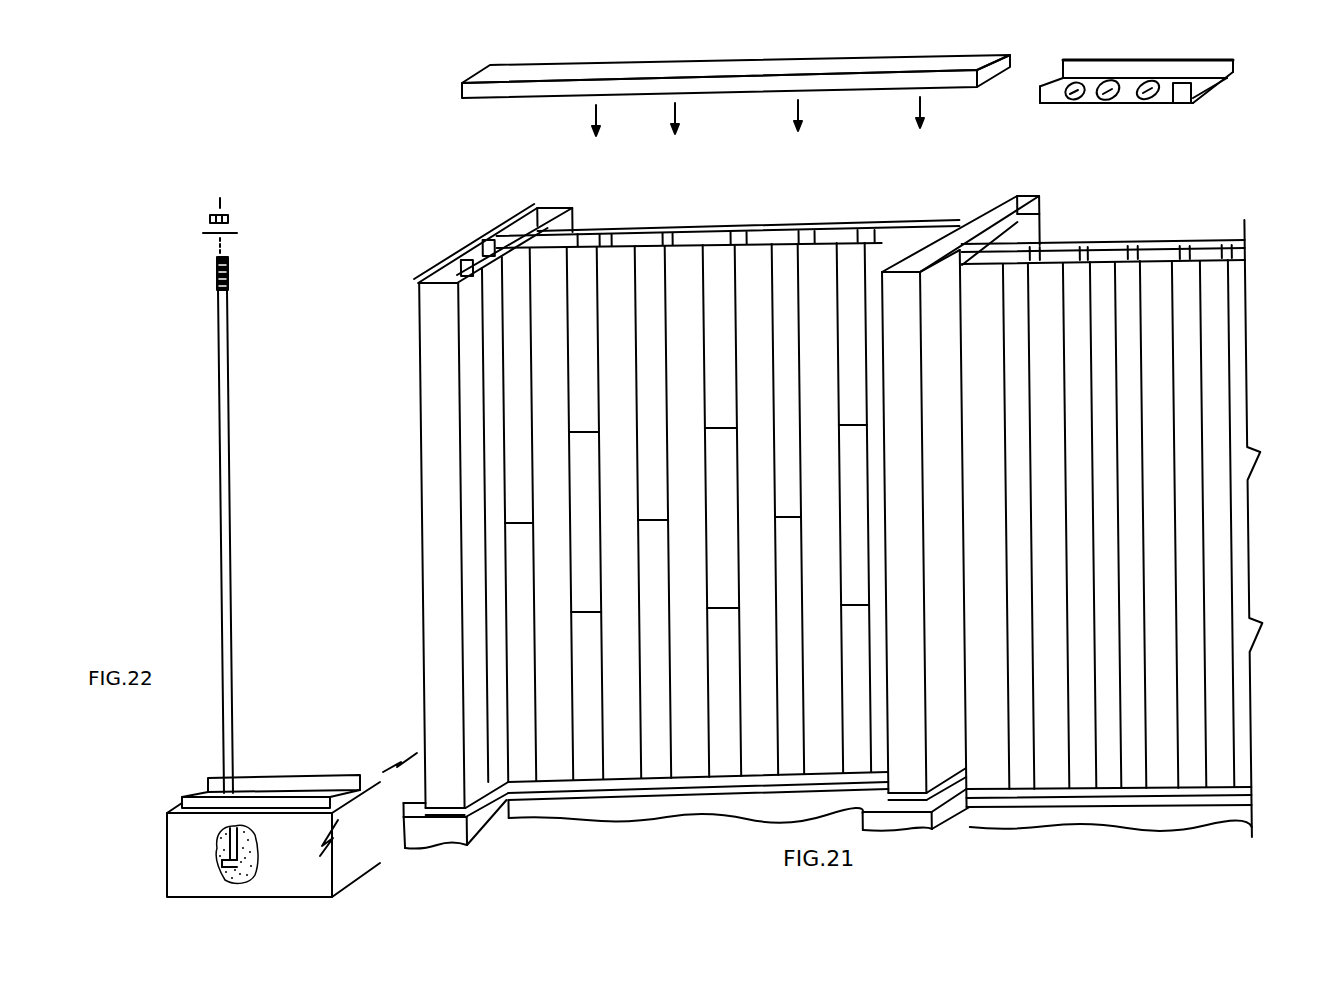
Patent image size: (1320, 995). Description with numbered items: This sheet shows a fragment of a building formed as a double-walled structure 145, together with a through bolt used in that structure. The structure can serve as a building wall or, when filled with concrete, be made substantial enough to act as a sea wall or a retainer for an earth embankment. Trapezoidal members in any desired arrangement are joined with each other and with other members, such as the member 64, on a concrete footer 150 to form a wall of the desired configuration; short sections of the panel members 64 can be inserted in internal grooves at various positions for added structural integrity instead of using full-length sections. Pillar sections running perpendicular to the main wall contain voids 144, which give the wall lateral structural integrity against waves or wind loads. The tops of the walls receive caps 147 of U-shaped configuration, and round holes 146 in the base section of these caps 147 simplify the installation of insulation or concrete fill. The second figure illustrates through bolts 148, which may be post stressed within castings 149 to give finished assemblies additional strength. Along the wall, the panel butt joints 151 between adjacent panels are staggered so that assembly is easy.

In FIG. 21, the member 64 is at (521, 238).
In FIG. 21, the voids 144 is at (535, 214).
In FIG. 21, the double-walled structure 145 is at (703, 218).
In FIG. 21, the round holes 146 is at (1123, 101).
In FIG. 21, the caps 147 is at (1233, 62).
In FIG. 22, the caps 147 is at (273, 776).
In FIG. 22, the through bolts 148 is at (229, 268).
In FIG. 22, the castings 149 is at (167, 835).
In FIG. 21, the concrete footer 150 is at (474, 803).
In FIG. 21, the panel butt joints 151 is at (523, 523).